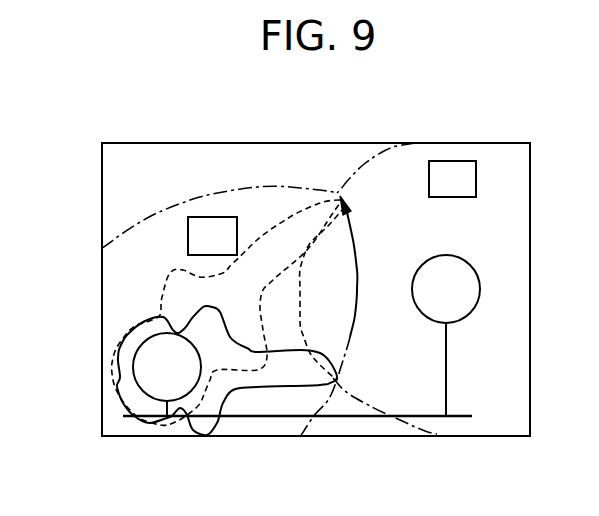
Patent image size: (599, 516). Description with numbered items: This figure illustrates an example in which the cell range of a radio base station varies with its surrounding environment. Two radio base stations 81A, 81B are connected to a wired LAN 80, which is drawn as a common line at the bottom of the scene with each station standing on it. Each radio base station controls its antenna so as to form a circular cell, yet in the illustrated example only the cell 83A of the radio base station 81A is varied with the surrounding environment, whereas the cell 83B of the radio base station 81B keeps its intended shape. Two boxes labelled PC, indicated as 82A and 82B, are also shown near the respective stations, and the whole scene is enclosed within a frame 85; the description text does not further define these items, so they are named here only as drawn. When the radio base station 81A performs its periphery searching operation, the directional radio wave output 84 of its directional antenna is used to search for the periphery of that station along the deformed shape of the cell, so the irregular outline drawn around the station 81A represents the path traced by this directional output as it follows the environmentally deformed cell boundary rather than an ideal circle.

The wired LAN 80 is at (243, 417).
The radio base station 81A is at (147, 340).
The radio base station 81B is at (447, 255).
The personal computer 82A is at (200, 217).
The personal computer 82B is at (470, 161).
The cell 83A is at (243, 190).
The cell 83B is at (352, 400).
The directional radio wave output 84 is at (283, 352).
The display screen 85 is at (102, 292).